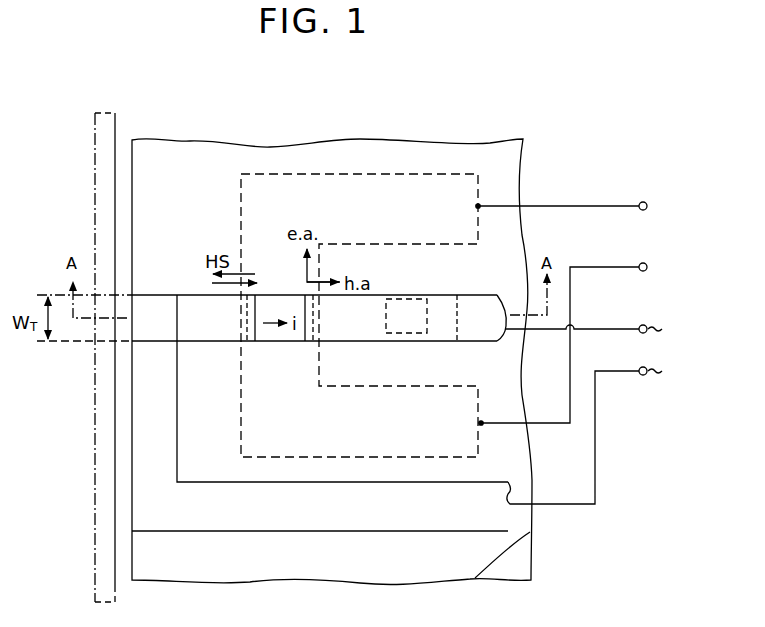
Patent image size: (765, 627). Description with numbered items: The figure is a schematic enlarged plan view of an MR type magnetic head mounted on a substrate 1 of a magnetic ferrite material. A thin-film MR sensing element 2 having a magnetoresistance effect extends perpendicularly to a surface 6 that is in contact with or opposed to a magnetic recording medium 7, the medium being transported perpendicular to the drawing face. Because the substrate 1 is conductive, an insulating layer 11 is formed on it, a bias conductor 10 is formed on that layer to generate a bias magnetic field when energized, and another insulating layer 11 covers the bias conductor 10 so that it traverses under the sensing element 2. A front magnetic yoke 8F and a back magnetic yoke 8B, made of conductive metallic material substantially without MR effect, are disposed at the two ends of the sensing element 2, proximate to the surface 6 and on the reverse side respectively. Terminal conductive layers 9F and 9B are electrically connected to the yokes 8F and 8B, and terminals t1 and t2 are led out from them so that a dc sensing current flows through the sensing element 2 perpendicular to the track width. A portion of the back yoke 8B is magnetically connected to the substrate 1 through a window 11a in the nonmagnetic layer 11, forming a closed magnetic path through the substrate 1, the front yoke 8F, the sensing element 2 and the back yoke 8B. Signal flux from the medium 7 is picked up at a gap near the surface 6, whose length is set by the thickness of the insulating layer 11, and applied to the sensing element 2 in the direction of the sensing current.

The substrate 1 is at (519, 566).
The MR sensing element 2 is at (273, 303).
The surface 6 is at (127, 331).
The magnetic recording medium 7 is at (115, 592).
The front magnetic yoke 8F is at (186, 293).
The back magnetic yoke 8B is at (373, 305).
The terminal conductive layer 9F is at (503, 519).
The terminal conductive layer 9B is at (484, 308).
The bias conductor 10 is at (458, 195).
The insulating layer 11 is at (457, 573).
The window 11a is at (421, 300).
The terminal t1 is at (593, 331).
The terminal t2 is at (594, 433).